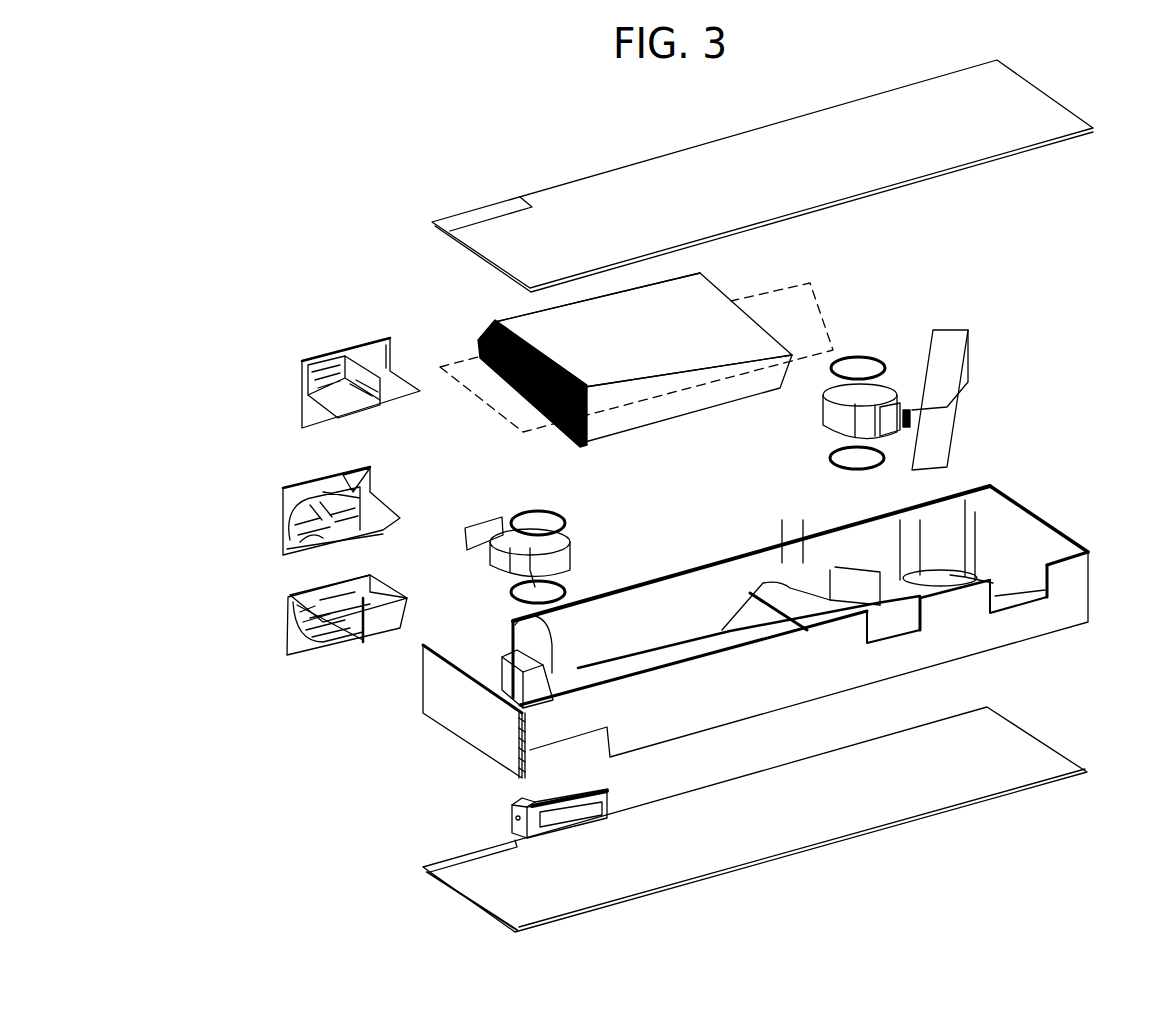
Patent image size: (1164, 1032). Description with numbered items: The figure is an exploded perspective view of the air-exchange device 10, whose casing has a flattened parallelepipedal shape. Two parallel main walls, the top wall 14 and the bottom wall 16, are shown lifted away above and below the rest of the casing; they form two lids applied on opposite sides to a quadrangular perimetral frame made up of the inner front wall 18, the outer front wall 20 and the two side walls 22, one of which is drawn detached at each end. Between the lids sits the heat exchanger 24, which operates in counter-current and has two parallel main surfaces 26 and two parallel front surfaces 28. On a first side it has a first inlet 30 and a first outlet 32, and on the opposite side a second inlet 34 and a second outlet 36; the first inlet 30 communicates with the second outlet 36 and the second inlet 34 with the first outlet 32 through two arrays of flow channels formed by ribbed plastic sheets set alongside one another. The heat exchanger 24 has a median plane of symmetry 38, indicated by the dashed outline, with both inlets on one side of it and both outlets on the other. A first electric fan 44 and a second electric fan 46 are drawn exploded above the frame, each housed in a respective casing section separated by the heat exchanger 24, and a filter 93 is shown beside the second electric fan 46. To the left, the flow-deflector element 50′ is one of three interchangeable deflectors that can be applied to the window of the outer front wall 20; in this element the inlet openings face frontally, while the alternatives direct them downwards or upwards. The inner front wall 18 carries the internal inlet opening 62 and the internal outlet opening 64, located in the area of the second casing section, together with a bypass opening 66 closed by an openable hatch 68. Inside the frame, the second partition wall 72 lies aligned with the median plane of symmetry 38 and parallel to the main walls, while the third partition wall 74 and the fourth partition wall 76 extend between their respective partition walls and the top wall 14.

The air-exchange device 10 is at (343, 134).
The top wall 14 is at (673, 168).
The bottom wall 16 is at (857, 810).
The inner front wall 18 is at (771, 644).
The outer front wall 20 is at (605, 620).
The side walls 22 is at (1047, 520).
The heat exchanger 24 is at (700, 352).
The main surfaces 26 is at (672, 310).
The front surfaces 28 is at (560, 296).
The first inlet 30 is at (480, 348).
The first outlet 32 is at (513, 403).
The second inlet 34 is at (800, 330).
The second outlet 36 is at (800, 390).
The median plane of symmetry 38 is at (808, 283).
The first electric fan 44 is at (579, 530).
The second electric fan 46 is at (811, 422).
The flow-deflector element 50′ is at (281, 365).
The internal inlet opening 62 is at (887, 627).
The internal outlet opening 64 is at (1025, 585).
The bypass opening 66 is at (535, 772).
The openable hatch 68 is at (587, 805).
The second partition wall 72 is at (790, 597).
The third partition wall 74 is at (567, 690).
The fourth partition wall 76 is at (857, 587).
The filter 93 is at (947, 338).